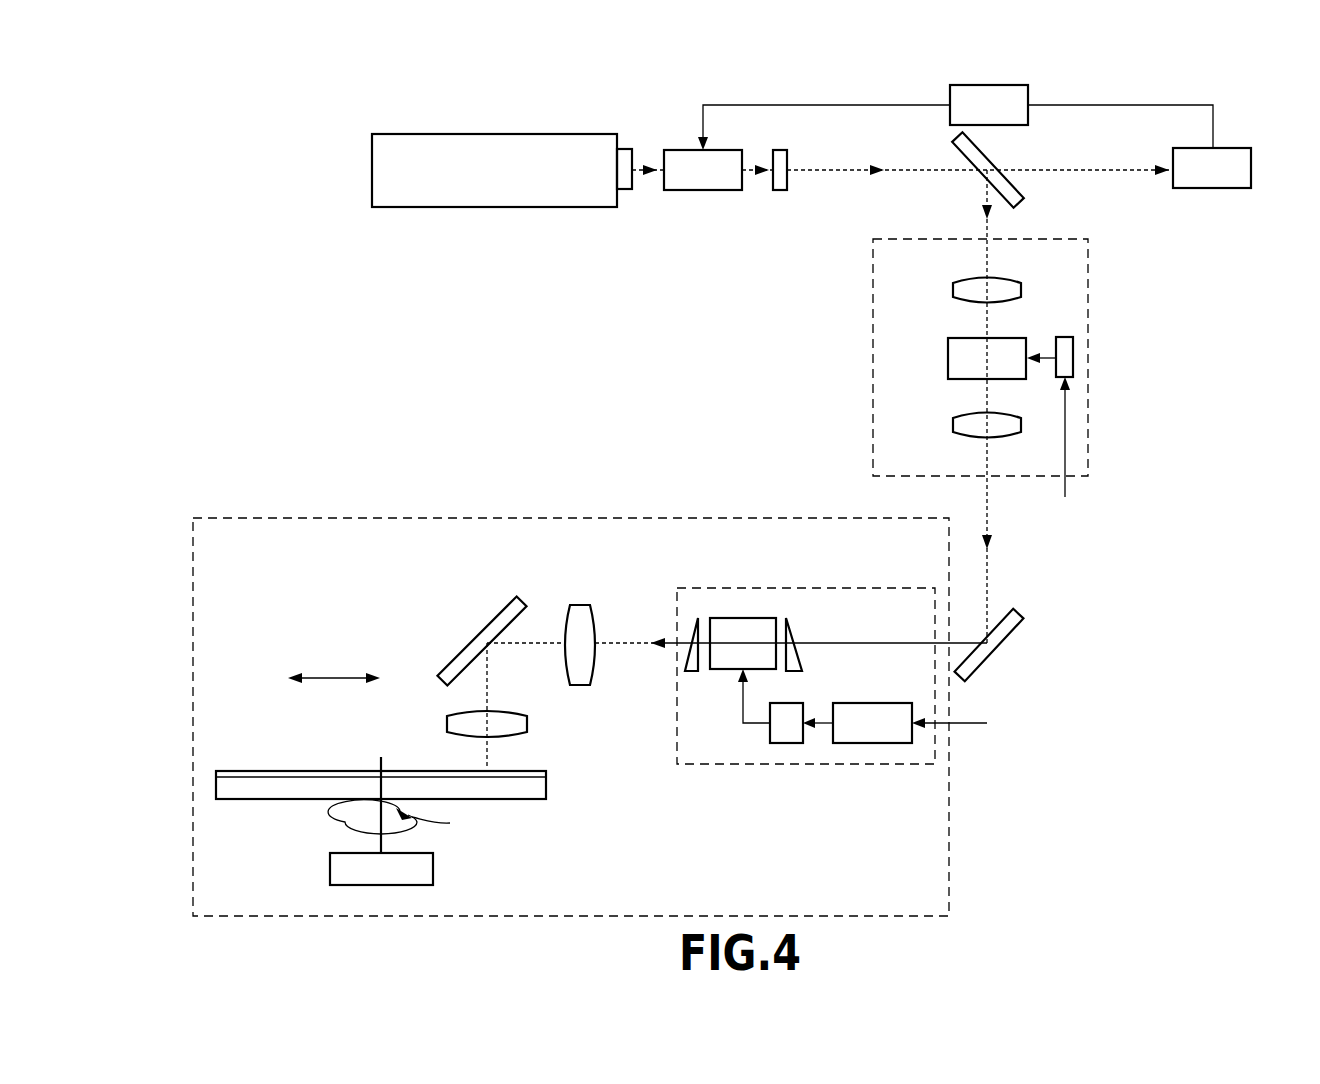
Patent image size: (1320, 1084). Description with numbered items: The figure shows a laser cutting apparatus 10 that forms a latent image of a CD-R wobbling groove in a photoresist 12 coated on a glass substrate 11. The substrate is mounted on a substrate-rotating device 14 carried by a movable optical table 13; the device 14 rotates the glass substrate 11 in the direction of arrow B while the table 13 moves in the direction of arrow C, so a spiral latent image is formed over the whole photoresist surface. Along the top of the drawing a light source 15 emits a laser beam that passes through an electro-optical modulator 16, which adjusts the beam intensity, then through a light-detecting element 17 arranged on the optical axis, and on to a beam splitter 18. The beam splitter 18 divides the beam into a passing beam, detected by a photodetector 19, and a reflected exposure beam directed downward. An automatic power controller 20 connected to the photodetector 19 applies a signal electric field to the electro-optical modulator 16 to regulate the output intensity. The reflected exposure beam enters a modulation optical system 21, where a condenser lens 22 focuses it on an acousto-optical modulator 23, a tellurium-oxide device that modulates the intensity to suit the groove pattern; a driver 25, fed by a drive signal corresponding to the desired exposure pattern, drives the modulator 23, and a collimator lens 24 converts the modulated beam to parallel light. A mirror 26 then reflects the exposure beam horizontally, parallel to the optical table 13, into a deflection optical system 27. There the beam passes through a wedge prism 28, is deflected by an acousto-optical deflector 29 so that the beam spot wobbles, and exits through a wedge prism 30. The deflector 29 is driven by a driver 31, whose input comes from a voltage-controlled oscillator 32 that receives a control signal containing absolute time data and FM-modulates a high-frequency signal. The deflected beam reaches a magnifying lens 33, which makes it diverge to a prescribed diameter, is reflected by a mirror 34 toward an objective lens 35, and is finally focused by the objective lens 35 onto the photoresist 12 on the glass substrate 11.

The laser cutting apparatus 10 is at (1198, 425).
The glass substrate 11 is at (250, 799).
The photoresist 12 is at (249, 771).
The movable optical table 13 is at (538, 518).
The substrate-rotating device 14 is at (433, 868).
The light source 15 is at (520, 134).
The electro-optical modulator 16 is at (675, 150).
The light-detecting element 17 is at (780, 190).
The beam splitter 18 is at (1004, 160).
The photodetector 19 is at (1240, 189).
The automatic power controller 20 is at (950, 116).
The modulation optical system 21 is at (1060, 239).
The condenser lens 22 is at (953, 288).
The acousto-optical modulator 23 is at (948, 352).
The collimator lens 24 is at (953, 424).
The driver 25 is at (1064, 337).
The mirror 26 is at (1012, 642).
The deflection optical system 27 is at (863, 588).
The wedge prism 28 is at (794, 636).
The acousto-optical deflector 29 is at (755, 618).
The wedge prism 30 is at (692, 630).
The driver 31 is at (770, 738).
The voltage-controlled oscillator 32 is at (873, 703).
The magnifying lens 33 is at (578, 605).
The mirror 34 is at (500, 608).
The objective lens 35 is at (527, 724).